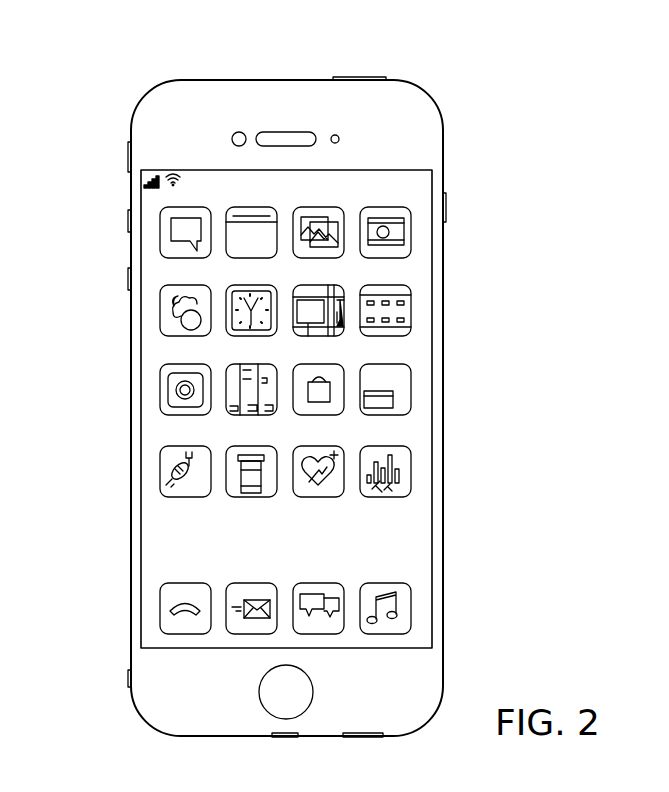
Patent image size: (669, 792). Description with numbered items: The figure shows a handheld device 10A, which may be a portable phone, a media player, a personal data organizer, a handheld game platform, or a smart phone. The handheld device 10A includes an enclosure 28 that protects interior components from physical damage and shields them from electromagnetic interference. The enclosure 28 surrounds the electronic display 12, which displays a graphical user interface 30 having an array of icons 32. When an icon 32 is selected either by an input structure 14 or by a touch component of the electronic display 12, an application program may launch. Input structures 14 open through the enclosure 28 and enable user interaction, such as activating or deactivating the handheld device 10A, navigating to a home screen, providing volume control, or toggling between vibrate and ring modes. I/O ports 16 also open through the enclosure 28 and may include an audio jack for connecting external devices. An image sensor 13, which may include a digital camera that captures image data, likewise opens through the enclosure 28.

The handheld device 10A is at (121, 70).
The electronic display 12 is at (433, 389).
The image sensor 13 is at (243, 131).
The input structures 14 is at (364, 77).
The I/O ports 16 is at (283, 737).
The enclosure 28 is at (443, 171).
The graphical user interface 30 is at (402, 274).
The icons 32 is at (320, 447).